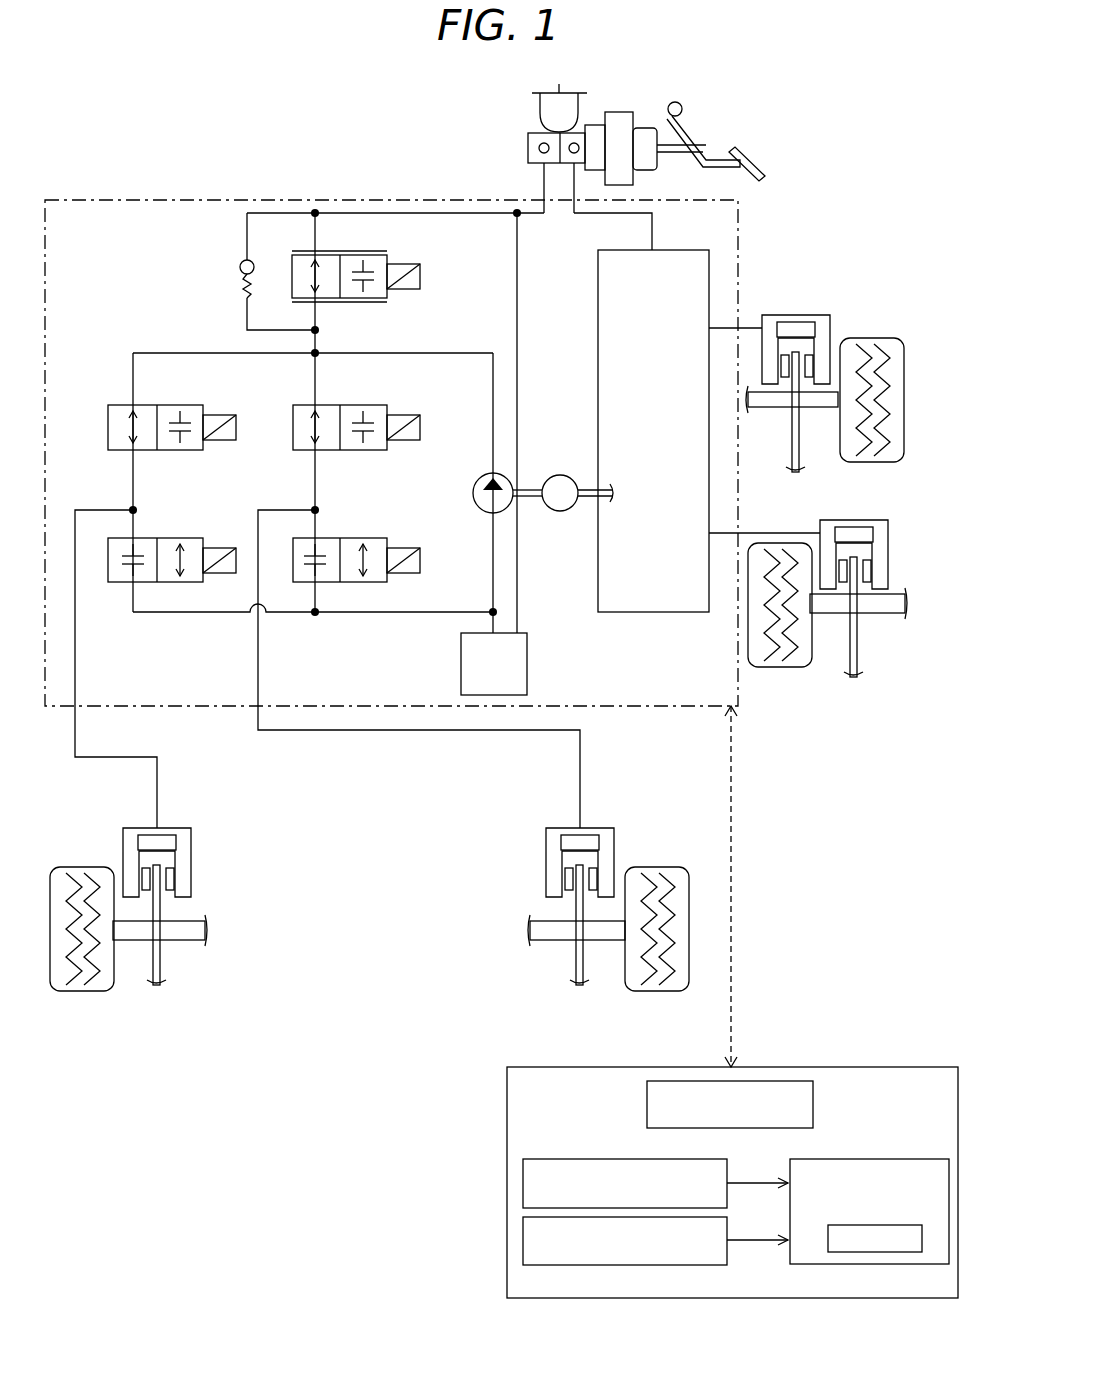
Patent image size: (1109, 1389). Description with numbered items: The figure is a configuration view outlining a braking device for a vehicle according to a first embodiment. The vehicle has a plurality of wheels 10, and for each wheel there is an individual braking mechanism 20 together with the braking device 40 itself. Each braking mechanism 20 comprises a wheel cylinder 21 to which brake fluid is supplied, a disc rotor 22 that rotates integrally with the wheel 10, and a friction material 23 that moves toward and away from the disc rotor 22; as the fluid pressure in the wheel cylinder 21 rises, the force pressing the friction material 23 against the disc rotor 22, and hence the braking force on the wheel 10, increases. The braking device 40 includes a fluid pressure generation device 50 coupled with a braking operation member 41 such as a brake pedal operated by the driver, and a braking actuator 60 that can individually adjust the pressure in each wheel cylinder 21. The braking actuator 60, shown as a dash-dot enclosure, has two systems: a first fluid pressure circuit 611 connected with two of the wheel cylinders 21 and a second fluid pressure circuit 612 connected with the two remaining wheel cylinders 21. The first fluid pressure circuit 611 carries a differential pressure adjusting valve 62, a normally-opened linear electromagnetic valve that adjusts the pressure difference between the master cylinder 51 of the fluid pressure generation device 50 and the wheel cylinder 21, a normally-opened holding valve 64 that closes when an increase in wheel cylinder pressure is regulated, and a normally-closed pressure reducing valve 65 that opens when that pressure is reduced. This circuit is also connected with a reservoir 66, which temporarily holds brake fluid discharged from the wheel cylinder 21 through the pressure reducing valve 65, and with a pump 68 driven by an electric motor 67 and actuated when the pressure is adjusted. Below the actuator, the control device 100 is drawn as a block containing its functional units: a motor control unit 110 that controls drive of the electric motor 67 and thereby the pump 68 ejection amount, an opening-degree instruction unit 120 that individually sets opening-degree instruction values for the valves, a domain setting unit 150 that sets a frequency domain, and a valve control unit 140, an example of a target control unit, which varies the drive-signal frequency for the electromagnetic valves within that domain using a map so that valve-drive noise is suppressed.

The wheel 10 is at (905, 400).
The braking mechanism 20 is at (507, 622).
The wheel cylinder 21 is at (797, 315).
The disc rotor 22 is at (797, 435).
The friction material 23 is at (786, 358).
The braking device 40 is at (236, 1022).
The braking operation member 41 is at (748, 166).
The fluid pressure generation device 50 is at (588, 121).
The master cylinder 51 is at (528, 148).
The braking actuator 60 is at (82, 199).
The first fluid pressure circuit 611 is at (371, 213).
The second fluid pressure circuit 612 is at (697, 250).
The differential pressure adjusting valve 62 is at (380, 255).
The holding valve 64 is at (192, 405).
The pressure reducing valve 65 is at (192, 538).
The reservoir 66 is at (461, 662).
The electric motor 67 is at (559, 475).
The pump 68 is at (475, 490).
The control device 100 is at (696, 1002).
The motor control unit 110 is at (813, 1102).
The opening-degree instruction unit 120 is at (523, 1240).
The valve control unit 140 is at (880, 1159).
The domain setting unit 150 is at (523, 1183).